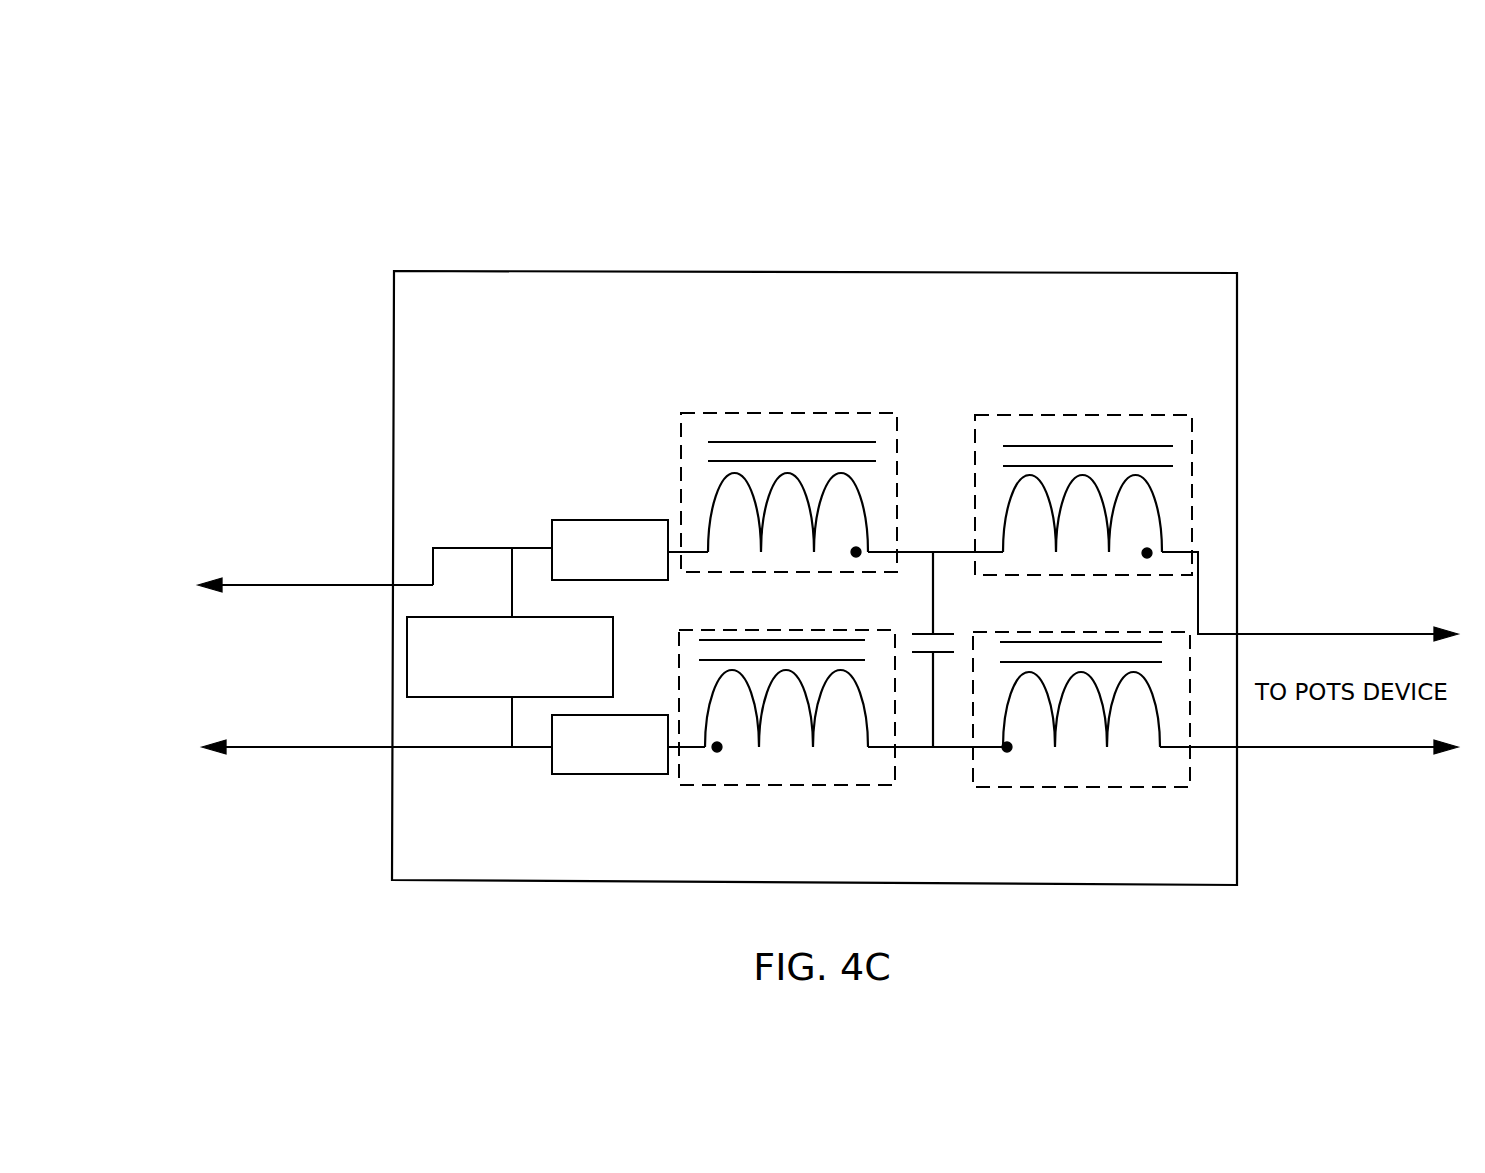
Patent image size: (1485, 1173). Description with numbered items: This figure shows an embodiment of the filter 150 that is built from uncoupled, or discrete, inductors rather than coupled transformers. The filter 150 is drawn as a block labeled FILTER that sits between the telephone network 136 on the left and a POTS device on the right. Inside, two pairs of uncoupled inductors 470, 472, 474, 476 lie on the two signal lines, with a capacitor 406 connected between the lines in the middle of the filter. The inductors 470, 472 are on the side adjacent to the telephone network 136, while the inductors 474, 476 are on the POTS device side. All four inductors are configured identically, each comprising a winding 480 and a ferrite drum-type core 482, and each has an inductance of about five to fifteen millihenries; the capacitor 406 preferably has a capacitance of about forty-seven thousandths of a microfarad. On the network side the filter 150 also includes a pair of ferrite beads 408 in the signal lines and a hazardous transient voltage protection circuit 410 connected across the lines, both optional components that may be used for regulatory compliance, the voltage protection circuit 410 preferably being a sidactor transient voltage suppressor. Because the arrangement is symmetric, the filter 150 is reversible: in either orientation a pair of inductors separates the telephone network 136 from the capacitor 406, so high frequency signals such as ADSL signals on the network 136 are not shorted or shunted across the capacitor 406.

The filter 150 is at (818, 258).
The telephone network 136 is at (364, 651).
The capacitor 406 is at (925, 632).
The ferrite beads 408 is at (612, 715).
The hazardous transient voltage protection circuit 410 is at (463, 698).
The uncoupled inductor 470 is at (752, 413).
The uncoupled inductor 472 is at (740, 787).
The uncoupled inductor 474 is at (1040, 415).
The uncoupled inductor 476 is at (1020, 788).
The winding 480 is at (708, 500).
The ferrite drum-type core 482 is at (836, 443).